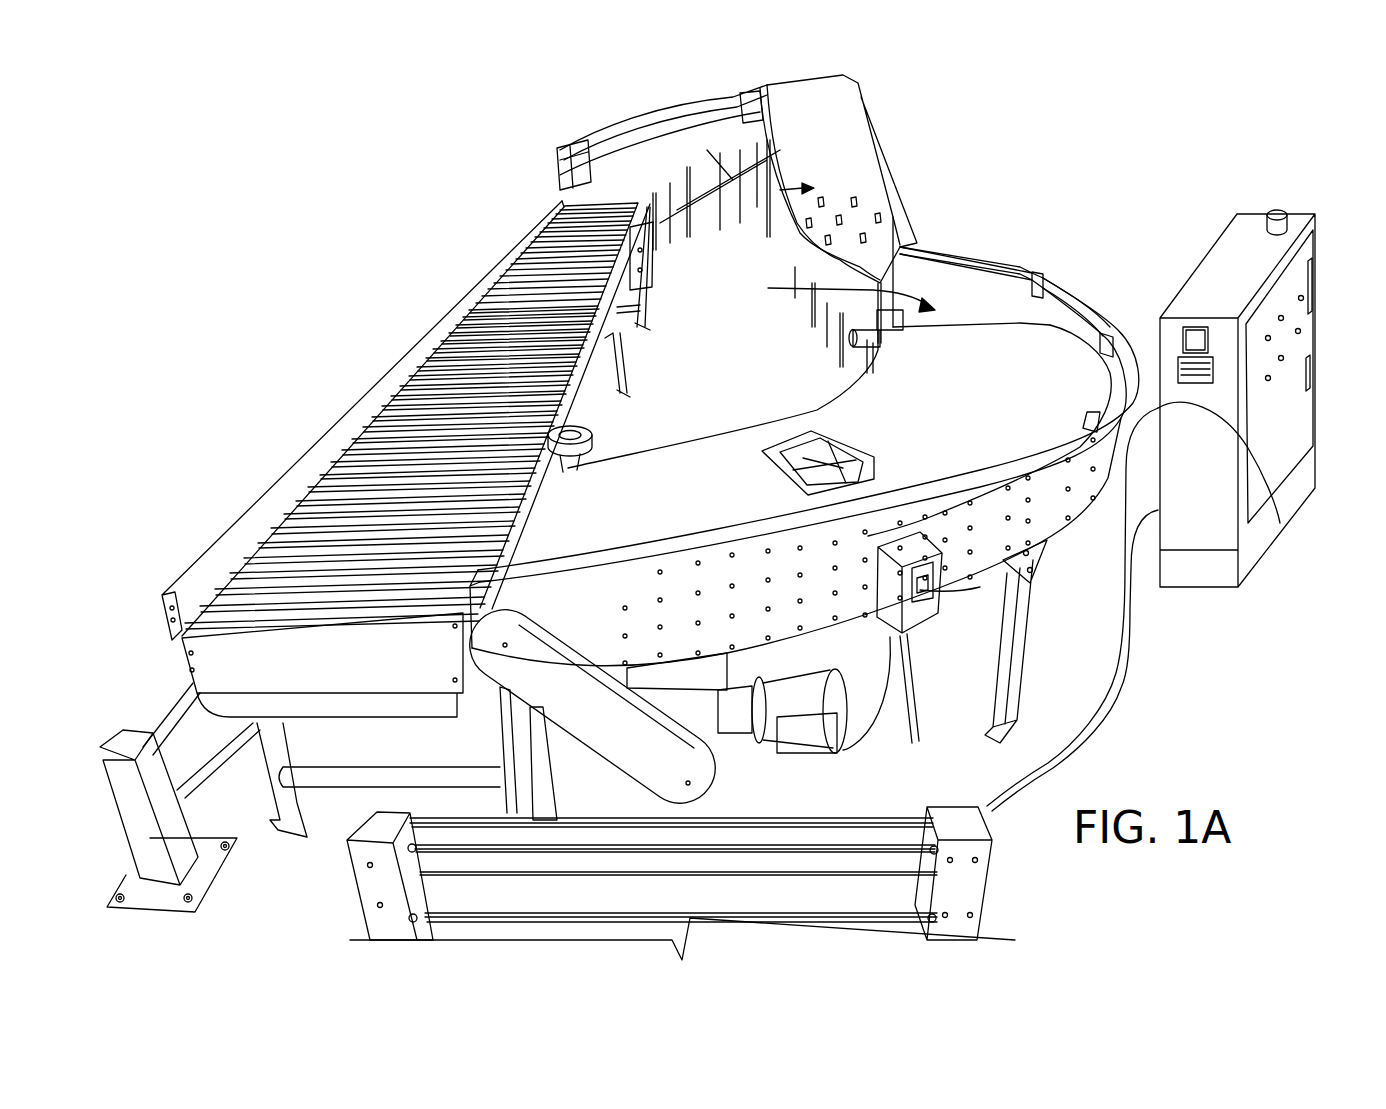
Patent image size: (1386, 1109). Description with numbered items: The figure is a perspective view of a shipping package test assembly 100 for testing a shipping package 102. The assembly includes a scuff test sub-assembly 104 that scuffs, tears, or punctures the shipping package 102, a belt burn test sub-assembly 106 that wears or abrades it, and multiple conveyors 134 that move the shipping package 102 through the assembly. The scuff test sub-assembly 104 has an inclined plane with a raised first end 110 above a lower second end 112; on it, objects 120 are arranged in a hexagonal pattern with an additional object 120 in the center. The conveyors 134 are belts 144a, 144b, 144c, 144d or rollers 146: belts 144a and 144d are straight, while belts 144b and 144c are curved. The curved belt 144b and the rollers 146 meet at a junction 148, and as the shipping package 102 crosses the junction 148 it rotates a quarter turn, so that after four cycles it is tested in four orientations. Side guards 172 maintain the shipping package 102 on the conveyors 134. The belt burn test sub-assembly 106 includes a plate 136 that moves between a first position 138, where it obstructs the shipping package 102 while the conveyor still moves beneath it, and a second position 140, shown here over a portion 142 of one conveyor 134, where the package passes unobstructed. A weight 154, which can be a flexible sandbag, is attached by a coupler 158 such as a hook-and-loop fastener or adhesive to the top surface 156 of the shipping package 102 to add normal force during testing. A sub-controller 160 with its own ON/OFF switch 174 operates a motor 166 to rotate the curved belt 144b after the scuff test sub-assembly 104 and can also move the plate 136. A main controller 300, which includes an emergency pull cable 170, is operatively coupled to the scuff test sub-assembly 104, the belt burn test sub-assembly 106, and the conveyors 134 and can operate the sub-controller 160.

The shipping package test assembly 100 is at (308, 84).
The shipping package 102 is at (847, 414).
The scuff test sub-assembly 104 is at (900, 141).
The belt burn test sub-assembly 106 is at (1080, 180).
The first end 110 is at (839, 97).
The second end 112 is at (909, 200).
The objects 120 is at (749, 235).
The conveyor 134 is at (477, 202).
The plate 136 is at (1064, 275).
The first position 138 is at (842, 305).
The second position 140 is at (1000, 248).
The portion 142 is at (830, 295).
The belt 144a is at (889, 262).
The curved belt 144b is at (1019, 405).
The curved belt 144c is at (607, 150).
The belt 144d is at (550, 170).
The rollers 146 is at (447, 377).
The junction 148 is at (553, 531).
The weight 154 is at (779, 419).
The top surface 156 is at (852, 455).
The coupler 158 is at (785, 474).
The sub-controller 160 is at (929, 609).
The motor 166 is at (839, 725).
The emergency pull cable 170 is at (1272, 515).
The side guards 172 is at (439, 299).
The ON/OFF switch 174 is at (914, 689).
The main controller 300 is at (1322, 327).